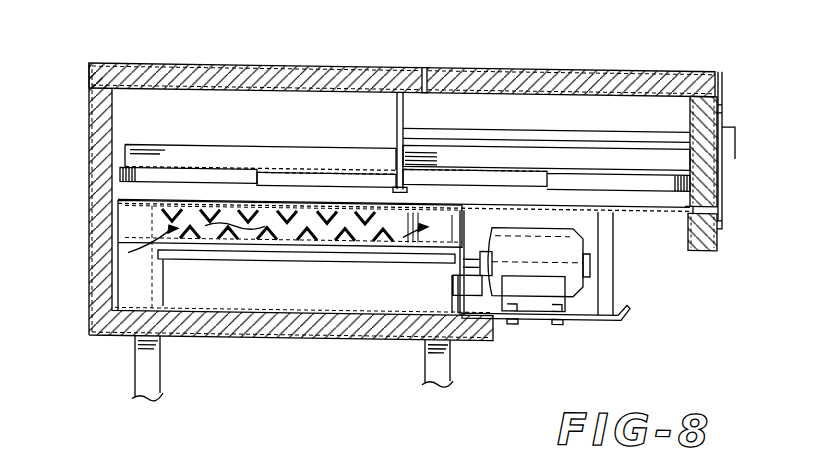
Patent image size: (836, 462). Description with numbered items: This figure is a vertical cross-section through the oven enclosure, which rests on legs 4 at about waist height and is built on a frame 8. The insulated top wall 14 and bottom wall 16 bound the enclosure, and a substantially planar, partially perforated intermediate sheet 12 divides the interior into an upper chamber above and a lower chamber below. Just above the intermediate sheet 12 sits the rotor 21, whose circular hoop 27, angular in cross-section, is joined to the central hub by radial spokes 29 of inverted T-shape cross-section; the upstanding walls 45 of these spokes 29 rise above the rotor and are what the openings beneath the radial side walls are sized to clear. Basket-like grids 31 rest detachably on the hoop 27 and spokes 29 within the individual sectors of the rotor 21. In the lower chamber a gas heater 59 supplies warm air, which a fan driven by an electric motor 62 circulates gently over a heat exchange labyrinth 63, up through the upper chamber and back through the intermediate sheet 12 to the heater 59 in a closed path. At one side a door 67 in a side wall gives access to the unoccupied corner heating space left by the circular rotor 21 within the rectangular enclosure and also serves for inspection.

The legs 4 is at (137, 372).
The frame 8 is at (383, 340).
The intermediate sheet 12 is at (125, 198).
The top wall 14 is at (313, 68).
The bottom wall 16 is at (523, 313).
The rotor 21 is at (110, 180).
The circular hoop 27 is at (175, 177).
The radial spokes 29 is at (387, 183).
The basket-like grids 31 is at (321, 163).
The upstanding walls 45 is at (243, 155).
The gas heater 59 is at (280, 292).
The electric motor 62 is at (565, 243).
The heat exchange labyrinth 63 is at (210, 224).
The door 67 is at (710, 187).